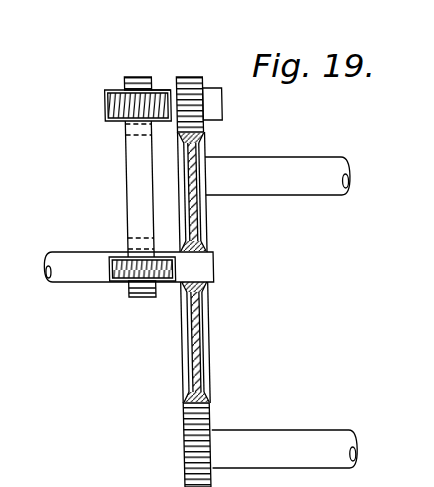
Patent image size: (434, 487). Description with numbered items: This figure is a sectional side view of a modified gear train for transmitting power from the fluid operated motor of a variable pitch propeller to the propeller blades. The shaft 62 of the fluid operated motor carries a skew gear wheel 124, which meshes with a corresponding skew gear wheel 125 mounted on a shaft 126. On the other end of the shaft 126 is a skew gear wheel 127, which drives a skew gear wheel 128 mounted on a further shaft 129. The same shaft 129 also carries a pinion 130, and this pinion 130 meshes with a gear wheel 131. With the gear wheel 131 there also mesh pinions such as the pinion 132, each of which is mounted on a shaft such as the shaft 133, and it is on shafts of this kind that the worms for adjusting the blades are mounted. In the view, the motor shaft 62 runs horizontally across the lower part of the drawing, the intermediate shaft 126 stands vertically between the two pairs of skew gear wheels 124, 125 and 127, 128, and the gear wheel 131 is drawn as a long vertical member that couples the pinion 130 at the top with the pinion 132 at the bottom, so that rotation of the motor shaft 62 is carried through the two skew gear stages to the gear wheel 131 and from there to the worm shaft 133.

The shaft 62 is at (82, 277).
The skew gear wheel 124 is at (142, 297).
The skew gear wheel 125 is at (140, 278).
The shaft 126 is at (145, 170).
The skew gear wheel 127 is at (108, 102).
The skew gear wheel 128 is at (124, 78).
The shaft 129 is at (166, 90).
The pinion 130 is at (218, 52).
The gear wheel 131 is at (208, 337).
The pinion 132 is at (197, 452).
The shaft 133 is at (287, 183).